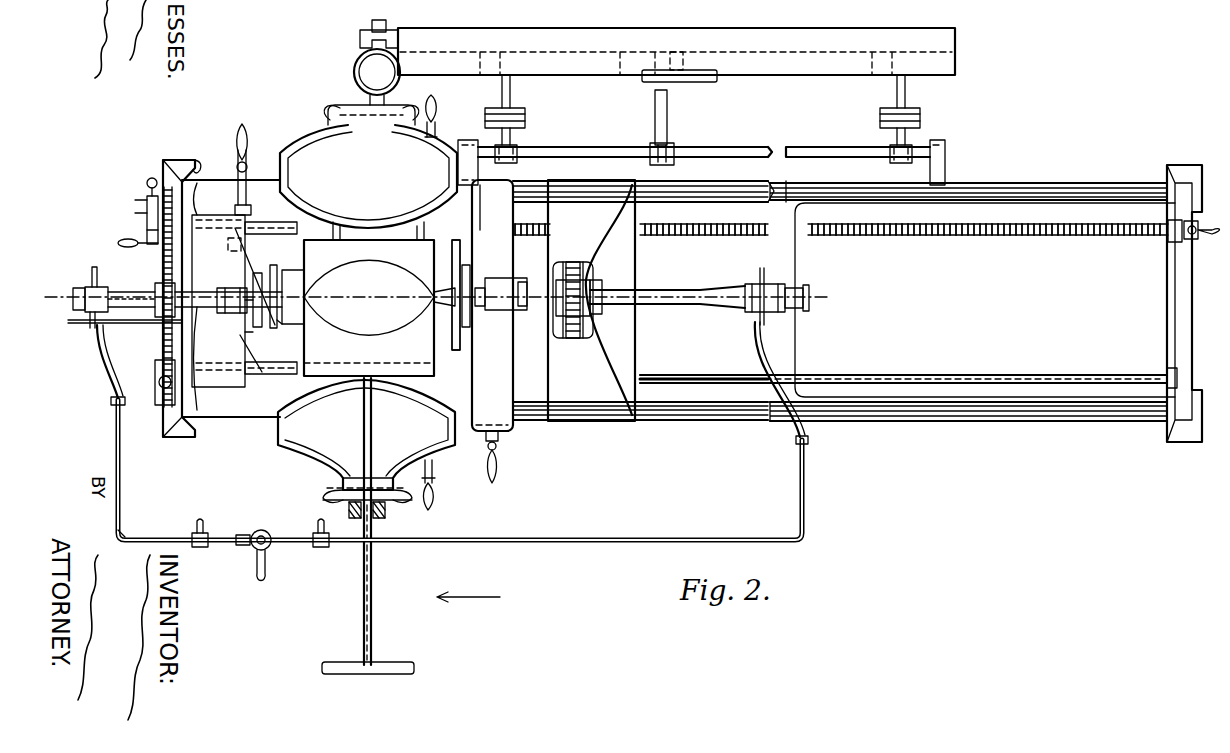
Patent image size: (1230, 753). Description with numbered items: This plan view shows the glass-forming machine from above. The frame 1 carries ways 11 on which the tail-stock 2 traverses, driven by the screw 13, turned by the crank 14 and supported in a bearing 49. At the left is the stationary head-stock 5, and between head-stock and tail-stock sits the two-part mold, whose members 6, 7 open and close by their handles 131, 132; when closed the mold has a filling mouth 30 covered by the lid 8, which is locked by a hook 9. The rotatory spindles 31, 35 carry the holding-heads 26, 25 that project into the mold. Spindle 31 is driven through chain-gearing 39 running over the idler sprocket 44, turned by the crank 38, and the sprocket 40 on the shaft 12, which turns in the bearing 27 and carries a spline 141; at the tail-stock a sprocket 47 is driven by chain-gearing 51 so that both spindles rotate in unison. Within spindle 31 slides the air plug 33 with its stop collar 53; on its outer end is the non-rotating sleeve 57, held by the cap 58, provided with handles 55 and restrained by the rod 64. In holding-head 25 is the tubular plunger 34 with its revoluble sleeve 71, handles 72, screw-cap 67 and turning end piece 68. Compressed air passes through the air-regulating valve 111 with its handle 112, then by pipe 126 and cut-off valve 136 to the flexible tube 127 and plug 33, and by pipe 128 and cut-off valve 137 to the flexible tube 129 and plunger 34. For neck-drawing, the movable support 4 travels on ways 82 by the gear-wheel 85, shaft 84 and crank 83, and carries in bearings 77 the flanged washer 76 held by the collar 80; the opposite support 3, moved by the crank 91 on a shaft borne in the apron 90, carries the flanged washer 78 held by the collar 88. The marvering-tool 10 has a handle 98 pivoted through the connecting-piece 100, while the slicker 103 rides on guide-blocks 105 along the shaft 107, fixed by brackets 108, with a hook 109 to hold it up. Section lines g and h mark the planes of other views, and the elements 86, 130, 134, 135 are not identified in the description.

The frame 1 is at (1178, 300).
The tail-stock 2 is at (591, 300).
The movable support 3 is at (492, 305).
The movable support 4 is at (245, 368).
The head-stock 5 is at (221, 298).
The mold member 6 is at (366, 441).
The mold member 7 is at (368, 182).
The lid 8 is at (377, 77).
The hook 9 is at (392, 18).
The marvering-tool 10 is at (395, 363).
The ways 11 is at (1065, 172).
The shaft 12 is at (990, 375).
The screw 13 is at (1030, 237).
The crank 14 is at (1200, 243).
The holding-head 25 is at (510, 282).
The holding-head 26 is at (232, 313).
The bearing 27 is at (1167, 370).
The mouth 30 is at (330, 102).
The rotatory spindle 31 is at (224, 318).
The plug 33 is at (140, 292).
The tubular plunger 34 is at (668, 283).
The rotatory spindle 35 is at (503, 315).
The crank 38 is at (137, 184).
The chain-gearing 39 is at (151, 297).
The sprocket 40 is at (158, 400).
The sprocket 44 is at (147, 205).
The sprocket 47 is at (585, 270).
The bearing 49 is at (1160, 239).
The chain-gearing 51 is at (575, 338).
The collar 53 is at (140, 309).
The handles 55 is at (95, 287).
The sleeve 57 is at (90, 325).
The cap 58 is at (78, 288).
The rod 64 is at (140, 330).
The cap 67 is at (800, 288).
The end piece 68 is at (809, 305).
The sleeve 71 is at (770, 284).
The handles 72 is at (760, 272).
The neck-drawing flanged washer 76 is at (287, 328).
The bearings 77 is at (283, 270).
The rotatory flanged neck-drawing washer 78 is at (462, 258).
The collar 80 is at (255, 285).
The ways 82 is at (270, 300).
The crank 83 is at (246, 135).
The shaft 84 is at (238, 172).
The gear-wheel 85 is at (241, 245).
The block 86 is at (235, 210).
The collar 88 is at (470, 280).
The apron 90 is at (512, 431).
The crank 91 is at (498, 470).
The handle 98 is at (372, 585).
The connecting-piece 100 is at (380, 518).
The slicker 103 is at (676, 55).
The guide-blocks 105 is at (525, 112).
The longitudinal shaft 107 is at (755, 140).
The brackets 108 is at (945, 165).
The hook 109 is at (667, 120).
The air-regulating valve 111 is at (268, 523).
The handle 112 is at (252, 565).
The pipe 126 is at (141, 526).
The flexible tube 127 is at (105, 370).
The pipe 128 is at (475, 471).
The flexible tube 129 is at (770, 355).
The drum 130 is at (369, 308).
The handle 131 is at (436, 494).
The handle 132 is at (437, 105).
The neck 134 is at (433, 303).
The neck 135 is at (300, 297).
The cut-off valve 136 is at (214, 531).
The cut-off valve 137 is at (318, 547).
The spline 141 is at (870, 377).
The section line g is at (368, 349).
The section line h is at (441, 296).